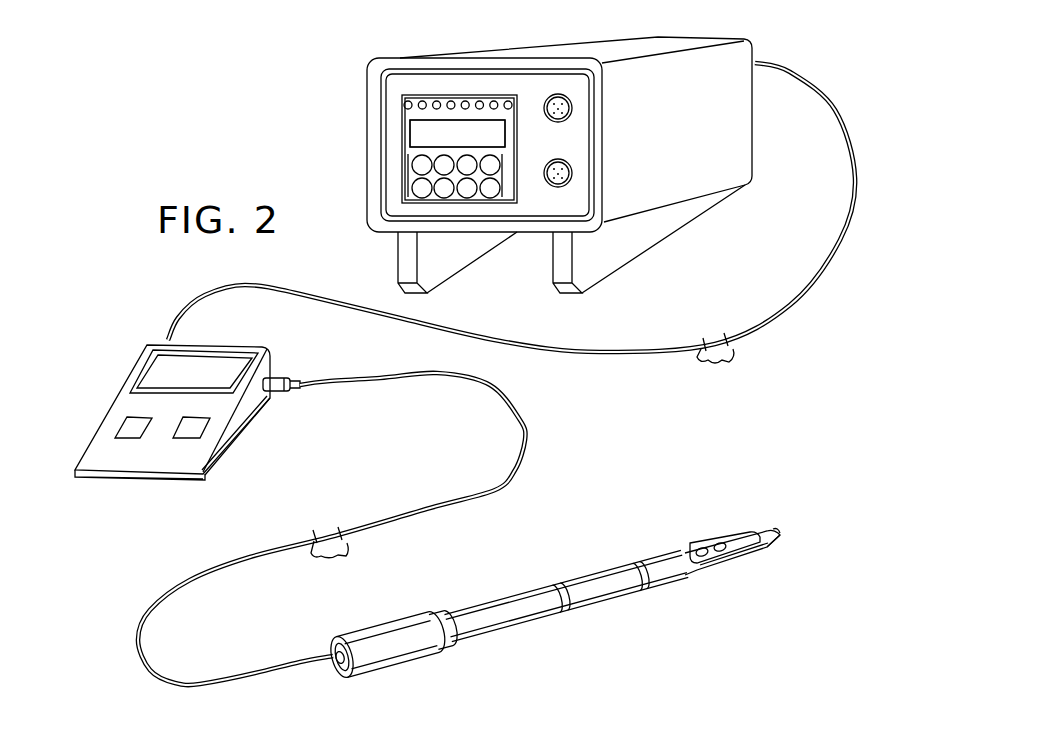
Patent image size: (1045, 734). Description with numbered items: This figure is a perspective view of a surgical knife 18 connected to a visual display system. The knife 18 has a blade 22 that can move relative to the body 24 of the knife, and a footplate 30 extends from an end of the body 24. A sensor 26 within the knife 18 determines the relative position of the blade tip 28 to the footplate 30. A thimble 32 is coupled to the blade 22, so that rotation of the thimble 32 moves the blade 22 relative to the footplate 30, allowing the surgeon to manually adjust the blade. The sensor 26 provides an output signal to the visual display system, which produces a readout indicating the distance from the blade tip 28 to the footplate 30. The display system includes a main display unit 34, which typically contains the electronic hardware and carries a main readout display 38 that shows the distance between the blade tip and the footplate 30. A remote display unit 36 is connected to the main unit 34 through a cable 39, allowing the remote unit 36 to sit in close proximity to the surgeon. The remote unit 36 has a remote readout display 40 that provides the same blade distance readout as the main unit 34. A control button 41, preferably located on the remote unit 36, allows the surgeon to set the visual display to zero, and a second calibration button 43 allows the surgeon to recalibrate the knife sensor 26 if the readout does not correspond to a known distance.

The surgical knife 18 is at (518, 589).
The blade 22 is at (770, 529).
The body 24 is at (678, 572).
The sensor 26 is at (328, 667).
The blade tip 28 is at (780, 527).
The footplate 30 is at (774, 542).
The thimble 32 is at (400, 630).
The main display unit 34 is at (368, 165).
The remote display unit 36 is at (112, 392).
The main readout display 38 is at (412, 131).
The cable 39 is at (615, 362).
The remote readout display 40 is at (223, 368).
The control button 41 is at (198, 425).
The second calibration button 43 is at (120, 433).